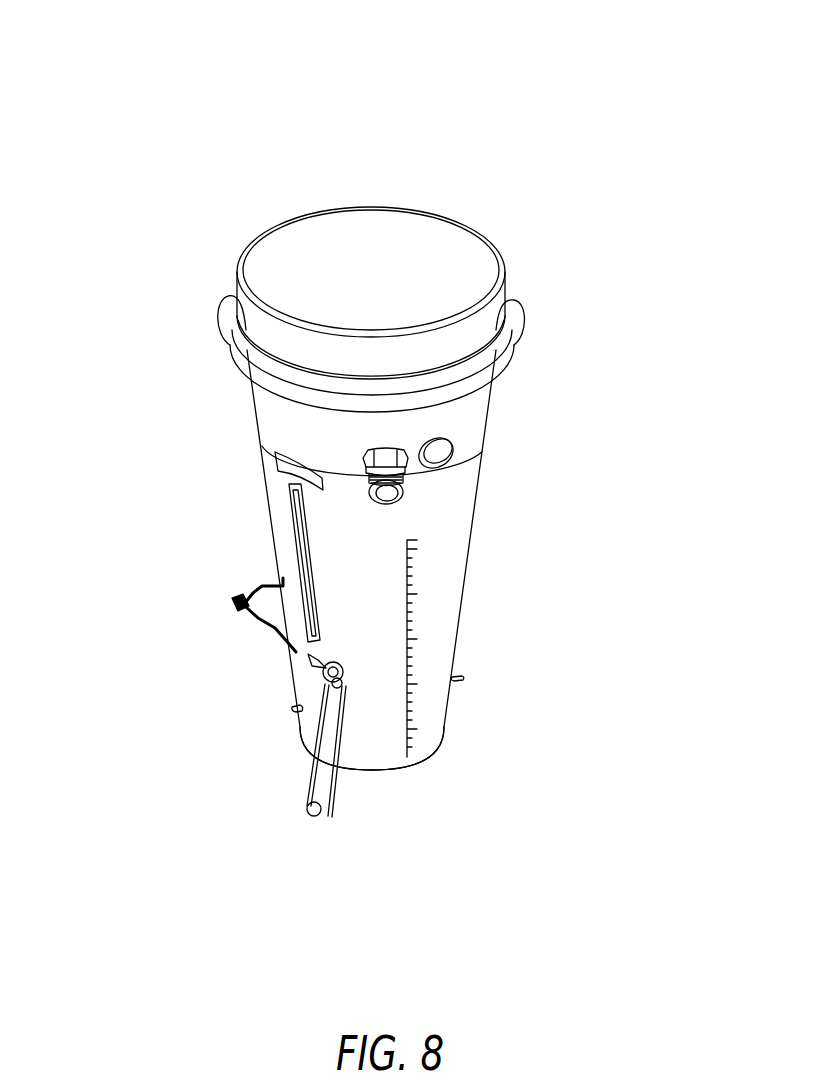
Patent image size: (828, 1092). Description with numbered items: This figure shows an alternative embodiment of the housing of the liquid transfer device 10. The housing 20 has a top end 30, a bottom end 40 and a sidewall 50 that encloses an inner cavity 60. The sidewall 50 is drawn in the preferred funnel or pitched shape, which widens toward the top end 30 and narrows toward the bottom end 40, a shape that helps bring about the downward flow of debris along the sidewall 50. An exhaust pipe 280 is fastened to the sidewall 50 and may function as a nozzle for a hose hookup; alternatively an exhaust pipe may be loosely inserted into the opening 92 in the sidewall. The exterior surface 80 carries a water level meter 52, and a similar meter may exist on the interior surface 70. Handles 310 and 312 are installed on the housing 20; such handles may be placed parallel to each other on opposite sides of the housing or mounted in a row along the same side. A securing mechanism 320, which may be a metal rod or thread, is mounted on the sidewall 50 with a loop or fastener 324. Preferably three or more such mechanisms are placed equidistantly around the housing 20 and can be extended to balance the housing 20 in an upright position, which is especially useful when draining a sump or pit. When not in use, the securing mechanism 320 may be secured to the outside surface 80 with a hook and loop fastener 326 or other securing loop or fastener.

The liquid transfer device 10 is at (292, 36).
The housing 20 is at (226, 412).
The top end 30 is at (450, 210).
The bottom end 40 is at (389, 779).
The sidewall 50 is at (477, 567).
The water level meter 52 is at (412, 541).
The inner cavity 60 is at (288, 251).
The interior surface 70 is at (460, 263).
The exterior surface 80 is at (448, 640).
The opening 92 is at (443, 445).
The exhaust pipe 280 is at (394, 489).
The handle 310 is at (262, 628).
The handle 312 is at (496, 342).
The securing mechanism 320 is at (310, 781).
The loop or fastener 324 is at (325, 671).
The hook and loop fastener 326 is at (310, 529).